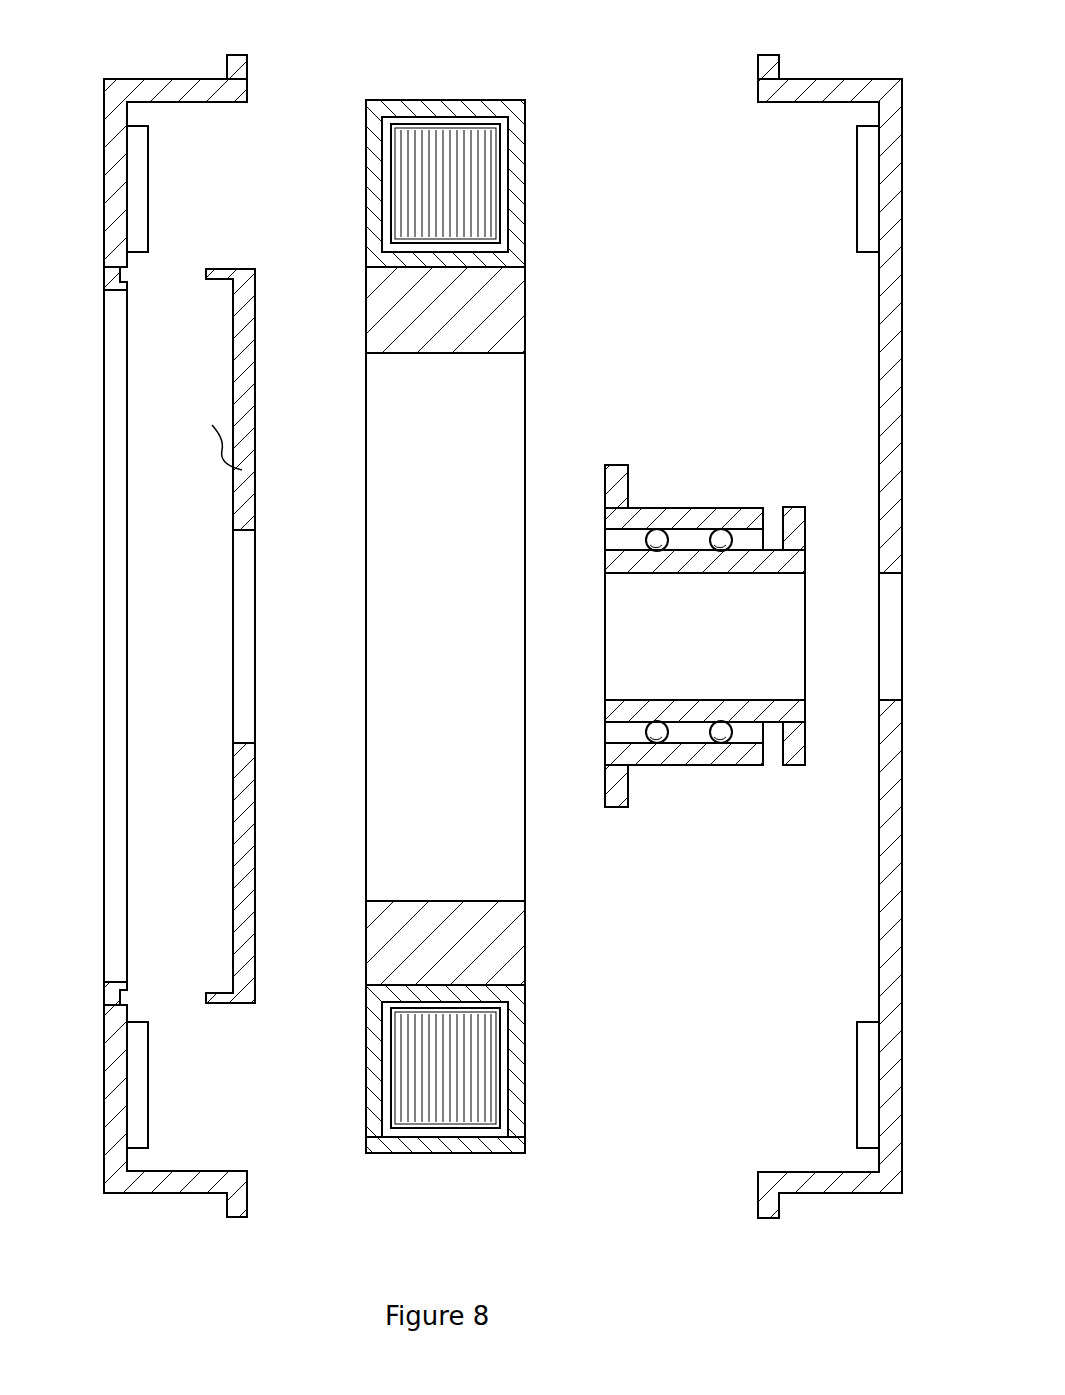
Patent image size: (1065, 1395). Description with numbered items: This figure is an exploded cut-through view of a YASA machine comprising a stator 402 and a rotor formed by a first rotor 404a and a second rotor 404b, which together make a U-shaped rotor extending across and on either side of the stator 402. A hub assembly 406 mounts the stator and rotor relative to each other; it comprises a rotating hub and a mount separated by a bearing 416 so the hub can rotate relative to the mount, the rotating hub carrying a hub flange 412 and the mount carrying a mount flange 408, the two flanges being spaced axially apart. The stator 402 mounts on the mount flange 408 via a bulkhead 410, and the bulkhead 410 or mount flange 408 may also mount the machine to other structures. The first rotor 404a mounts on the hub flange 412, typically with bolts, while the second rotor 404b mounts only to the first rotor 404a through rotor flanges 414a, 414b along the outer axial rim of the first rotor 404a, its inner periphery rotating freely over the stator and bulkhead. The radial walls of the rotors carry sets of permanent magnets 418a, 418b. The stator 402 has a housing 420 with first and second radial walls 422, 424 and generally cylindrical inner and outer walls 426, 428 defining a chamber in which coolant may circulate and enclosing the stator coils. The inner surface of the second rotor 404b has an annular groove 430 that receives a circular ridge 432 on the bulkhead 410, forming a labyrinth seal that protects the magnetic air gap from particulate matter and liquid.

The stator 402 is at (440, 638).
The first rotor 404a is at (895, 375).
The second rotor 404b is at (160, 84).
The hub assembly 406 is at (694, 664).
The mount flange 408 is at (620, 477).
The bulkhead 410 is at (239, 500).
The hub flange 412 is at (790, 515).
The rotor flange 414a is at (768, 66).
The rotor flange 414b is at (243, 67).
The bearing 416 is at (723, 533).
The permanent magnets 418a is at (865, 208).
The permanent magnets 418b is at (134, 179).
The housing 420 is at (499, 142).
The first radial wall 422 is at (525, 1049).
The second radial wall 424 is at (376, 1104).
The inner wall 426 is at (498, 302).
The outer wall 428 is at (443, 1149).
The annular groove 430 is at (123, 270).
The circular ridge 432 is at (218, 277).